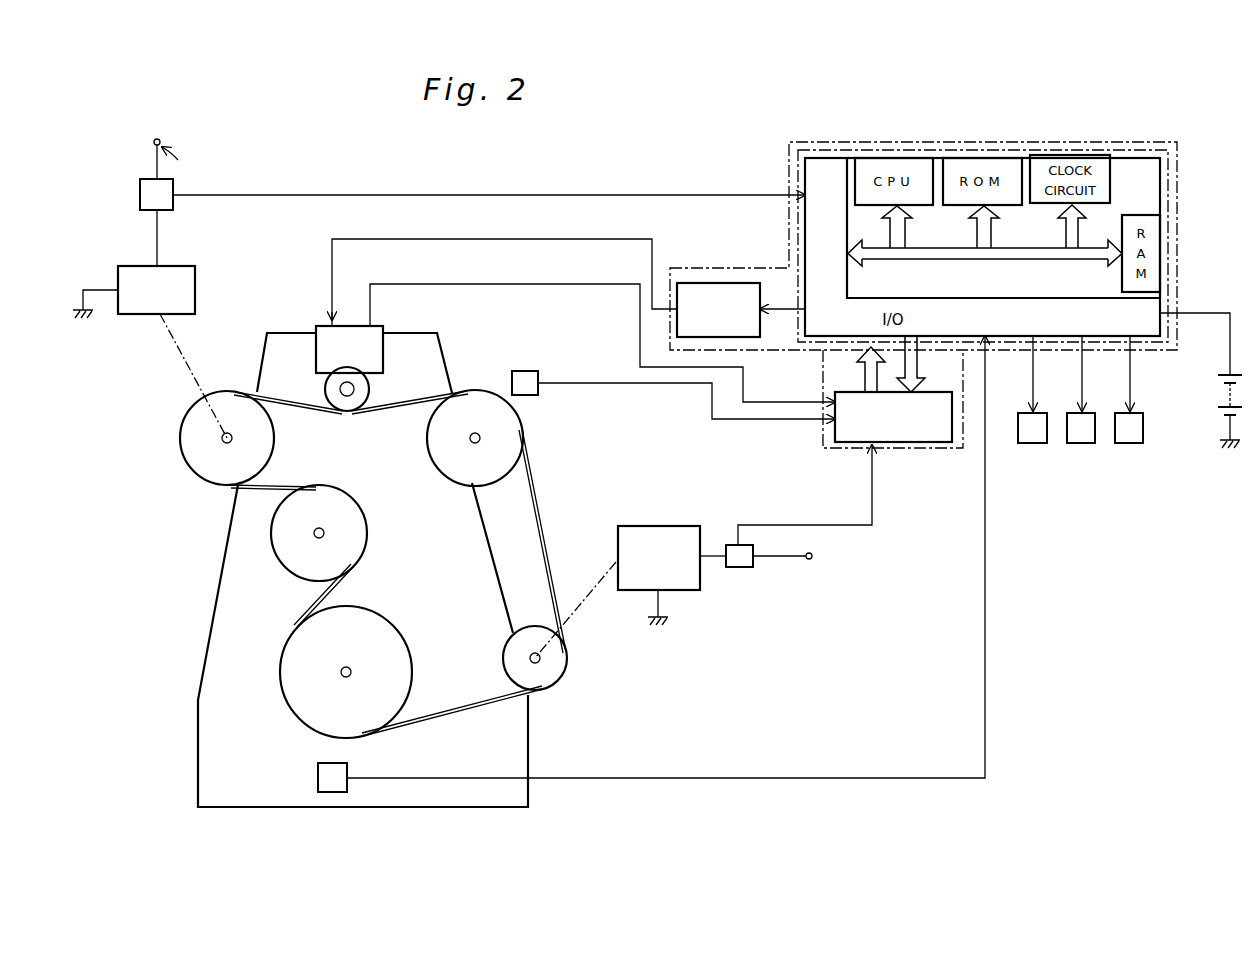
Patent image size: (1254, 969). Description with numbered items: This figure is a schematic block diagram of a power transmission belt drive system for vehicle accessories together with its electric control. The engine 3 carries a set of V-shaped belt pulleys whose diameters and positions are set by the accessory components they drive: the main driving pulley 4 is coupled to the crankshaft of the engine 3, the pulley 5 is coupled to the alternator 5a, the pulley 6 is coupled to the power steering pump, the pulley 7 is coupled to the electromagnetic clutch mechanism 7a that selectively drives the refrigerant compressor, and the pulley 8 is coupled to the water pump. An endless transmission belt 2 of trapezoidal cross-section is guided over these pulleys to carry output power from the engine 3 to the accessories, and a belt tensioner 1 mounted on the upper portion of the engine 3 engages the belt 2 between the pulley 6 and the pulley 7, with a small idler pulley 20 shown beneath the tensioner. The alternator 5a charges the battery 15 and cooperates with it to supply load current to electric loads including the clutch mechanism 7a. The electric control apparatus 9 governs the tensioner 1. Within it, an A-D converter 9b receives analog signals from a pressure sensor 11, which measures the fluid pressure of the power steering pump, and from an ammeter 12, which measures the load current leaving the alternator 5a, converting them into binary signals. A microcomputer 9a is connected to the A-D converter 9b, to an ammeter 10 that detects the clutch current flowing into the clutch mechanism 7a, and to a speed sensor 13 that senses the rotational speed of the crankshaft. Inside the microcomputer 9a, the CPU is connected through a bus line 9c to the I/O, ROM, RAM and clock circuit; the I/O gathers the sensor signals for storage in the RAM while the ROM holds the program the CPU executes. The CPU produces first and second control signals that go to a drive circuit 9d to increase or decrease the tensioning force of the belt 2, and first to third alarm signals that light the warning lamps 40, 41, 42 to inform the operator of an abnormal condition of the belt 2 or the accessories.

The belt tensioner 1 is at (388, 321).
The endless transmission belt 2 is at (412, 407).
The engine 3 is at (203, 648).
The main driving pulley 4 is at (292, 697).
The pulley 5 is at (558, 662).
The alternator 5a is at (670, 566).
The pulley 6 is at (445, 458).
The pulley 7 is at (180, 438).
The electromagnetic clutch mechanism 7a is at (136, 266).
The pulley 8 is at (282, 550).
The electric control apparatus 9 is at (788, 155).
The microcomputer 9a is at (1170, 220).
The A-D converter 9b is at (917, 444).
The bus line 9c is at (1008, 258).
The drive circuit 9d is at (730, 283).
The ammeter 10 is at (167, 205).
The pressure sensor 11 is at (530, 371).
The ammeter 12 is at (752, 567).
The speed sensor 13 is at (343, 789).
The battery 15 is at (1223, 410).
The pulley 20 is at (345, 409).
The first warning lamp 40 is at (1043, 439).
The second warning lamp 41 is at (1092, 439).
The third warning lamp 42 is at (1140, 439).